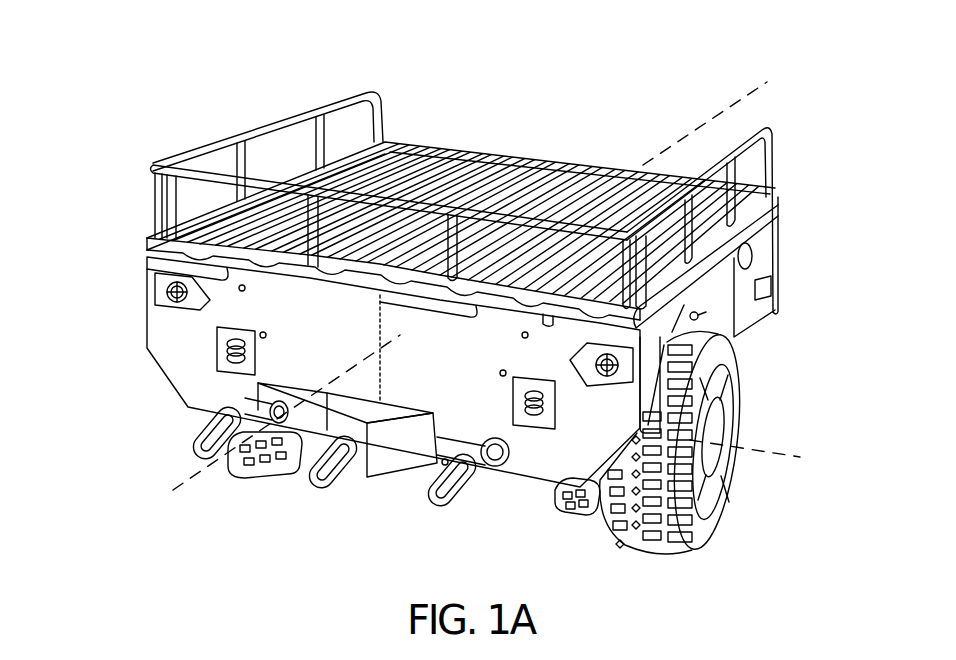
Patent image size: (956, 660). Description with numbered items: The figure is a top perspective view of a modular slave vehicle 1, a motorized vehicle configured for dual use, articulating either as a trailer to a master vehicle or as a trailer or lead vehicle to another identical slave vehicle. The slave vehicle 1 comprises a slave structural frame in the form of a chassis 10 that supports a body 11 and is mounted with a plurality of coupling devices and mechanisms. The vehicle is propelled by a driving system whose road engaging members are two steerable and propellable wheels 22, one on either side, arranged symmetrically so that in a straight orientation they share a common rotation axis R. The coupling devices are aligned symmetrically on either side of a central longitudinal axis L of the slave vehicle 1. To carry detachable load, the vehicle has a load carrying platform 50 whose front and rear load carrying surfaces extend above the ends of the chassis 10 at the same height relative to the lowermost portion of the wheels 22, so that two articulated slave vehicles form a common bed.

The modular slave vehicle 1 is at (768, 24).
The load carrying platform 50 is at (368, 180).
The body 11 is at (163, 349).
The chassis 10 is at (507, 460).
The wheels 22 is at (277, 470).
The central longitudinal axis L is at (718, 122).
The common rotation axis R is at (752, 447).